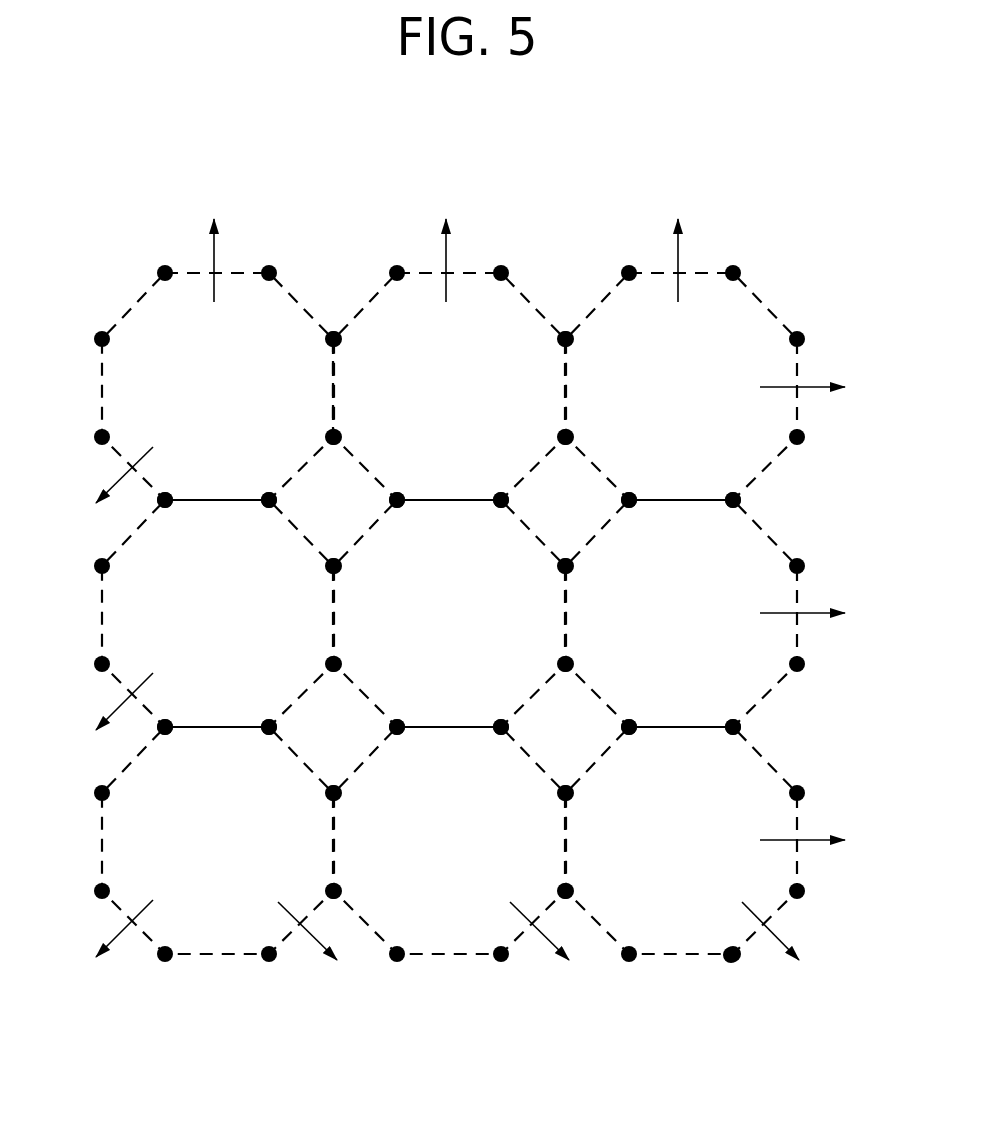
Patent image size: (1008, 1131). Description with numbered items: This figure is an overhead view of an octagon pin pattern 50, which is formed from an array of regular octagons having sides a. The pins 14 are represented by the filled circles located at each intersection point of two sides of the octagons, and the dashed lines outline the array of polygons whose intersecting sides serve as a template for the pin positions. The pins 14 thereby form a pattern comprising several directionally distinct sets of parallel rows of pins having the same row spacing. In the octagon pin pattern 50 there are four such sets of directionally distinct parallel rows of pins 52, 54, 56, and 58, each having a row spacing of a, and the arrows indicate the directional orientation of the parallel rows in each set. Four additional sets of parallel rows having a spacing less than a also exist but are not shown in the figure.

The octagon pin pattern 50 is at (329, 200).
The set of parallel rows of pins 52 is at (214, 256).
The set of parallel rows of pins 54 is at (808, 387).
The set of parallel rows of pins 56 is at (316, 938).
The set of parallel rows of pins 58 is at (116, 482).
The pin 14 is at (723, 972).
The side a is at (346, 388).